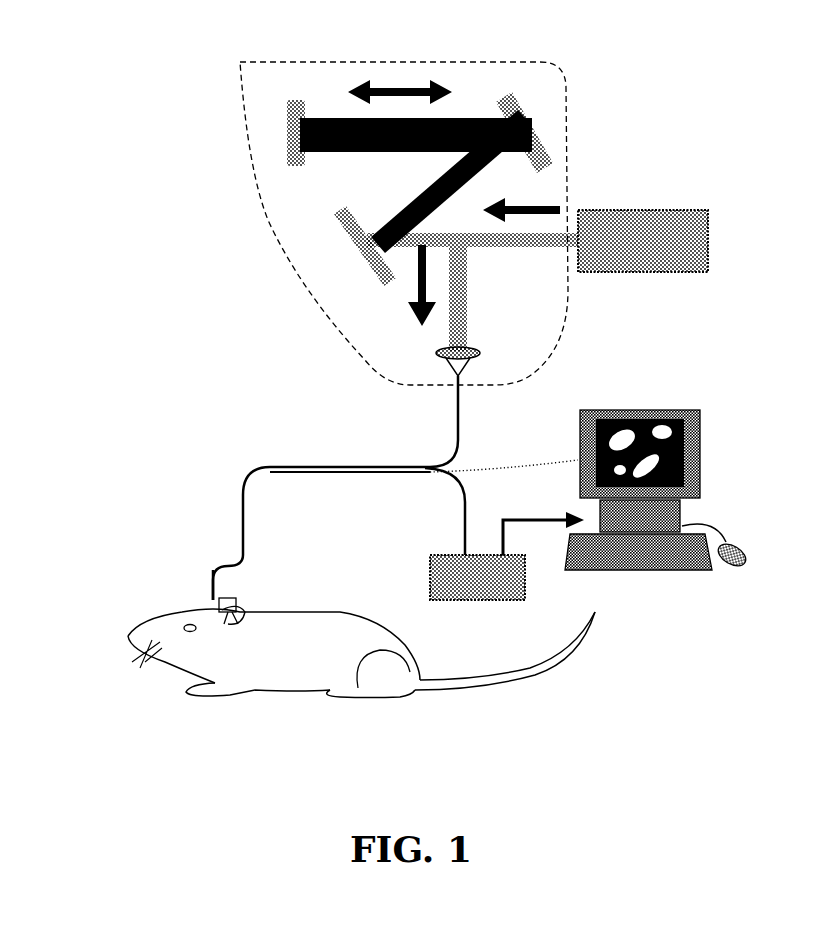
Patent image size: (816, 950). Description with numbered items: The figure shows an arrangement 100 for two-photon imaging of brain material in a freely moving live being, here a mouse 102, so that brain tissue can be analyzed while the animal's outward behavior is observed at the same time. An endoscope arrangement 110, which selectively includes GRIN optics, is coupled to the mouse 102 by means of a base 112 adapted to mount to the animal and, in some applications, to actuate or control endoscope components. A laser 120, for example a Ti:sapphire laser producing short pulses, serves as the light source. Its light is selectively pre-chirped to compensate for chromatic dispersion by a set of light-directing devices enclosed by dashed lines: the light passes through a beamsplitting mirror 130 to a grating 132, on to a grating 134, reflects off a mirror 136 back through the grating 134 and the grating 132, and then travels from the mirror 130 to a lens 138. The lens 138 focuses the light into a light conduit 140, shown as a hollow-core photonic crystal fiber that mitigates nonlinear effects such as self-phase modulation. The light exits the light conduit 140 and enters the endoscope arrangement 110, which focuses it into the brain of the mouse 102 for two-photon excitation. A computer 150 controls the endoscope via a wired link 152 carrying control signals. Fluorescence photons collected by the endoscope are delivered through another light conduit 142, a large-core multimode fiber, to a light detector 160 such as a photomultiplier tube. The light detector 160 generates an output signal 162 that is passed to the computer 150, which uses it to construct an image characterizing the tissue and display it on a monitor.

The arrangement 100 is at (736, 60).
The mouse 102 is at (332, 614).
The endoscope arrangement 110 is at (207, 588).
The base 112 is at (236, 598).
The laser 120 is at (672, 210).
The mirror 130 is at (484, 252).
The grating 132 is at (345, 210).
The grating 134 is at (512, 98).
The mirror 136 is at (292, 104).
The lens 138 is at (472, 352).
The light conduit 140 is at (462, 418).
The light conduit 142 is at (462, 520).
The computer 150 is at (680, 410).
The wired link 152 is at (492, 470).
The light detector 160 is at (470, 600).
The output signal 162 is at (508, 518).